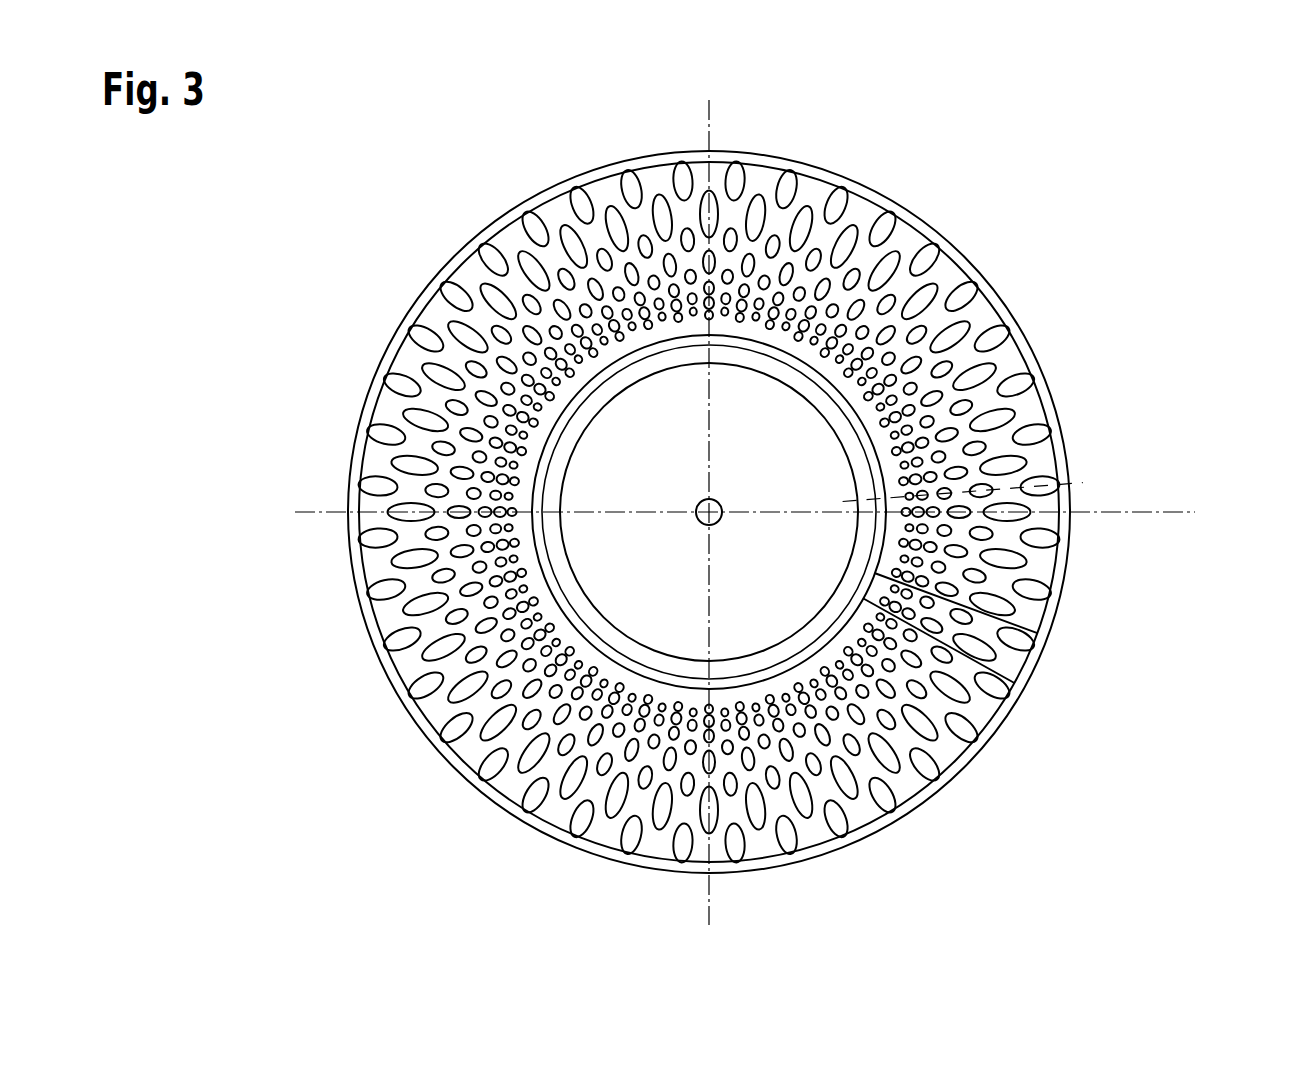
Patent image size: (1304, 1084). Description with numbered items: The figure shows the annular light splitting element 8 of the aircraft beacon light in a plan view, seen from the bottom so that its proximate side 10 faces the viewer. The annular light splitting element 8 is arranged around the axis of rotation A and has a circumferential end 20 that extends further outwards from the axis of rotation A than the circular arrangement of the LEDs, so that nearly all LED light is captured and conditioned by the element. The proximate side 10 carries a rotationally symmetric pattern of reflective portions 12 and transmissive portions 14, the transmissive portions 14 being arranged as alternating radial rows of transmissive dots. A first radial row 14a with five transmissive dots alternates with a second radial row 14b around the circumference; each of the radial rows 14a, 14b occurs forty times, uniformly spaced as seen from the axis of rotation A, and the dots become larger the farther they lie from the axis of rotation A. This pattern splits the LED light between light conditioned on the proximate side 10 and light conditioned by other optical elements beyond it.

The annular light splitting element 8 is at (906, 157).
The circumferential end 20 is at (964, 262).
The transmissive portions 14 is at (1020, 382).
The reflective portions 12 is at (1037, 457).
The proximate side 10 is at (457, 540).
The second radial row 14b is at (1054, 656).
The first radial row 14a is at (1041, 683).
The axis of rotation A is at (709, 512).